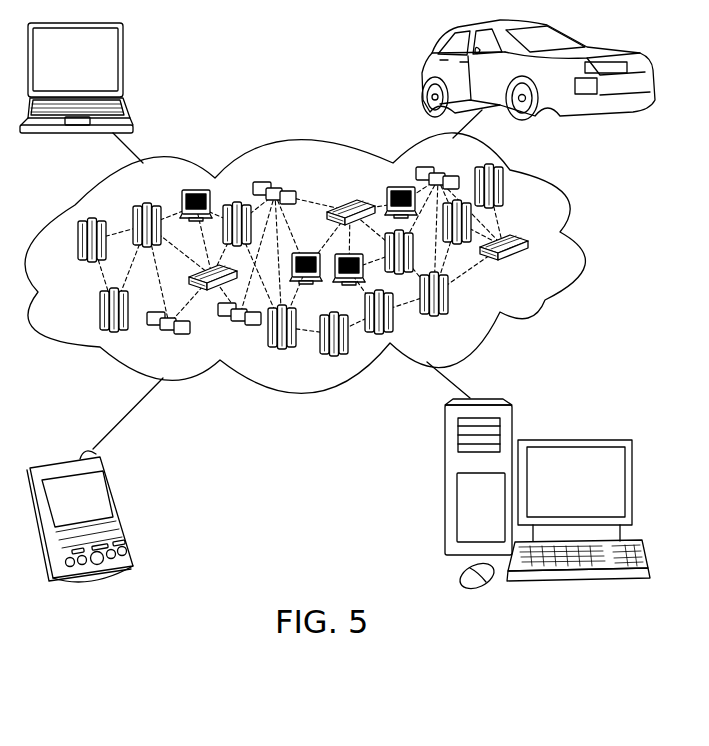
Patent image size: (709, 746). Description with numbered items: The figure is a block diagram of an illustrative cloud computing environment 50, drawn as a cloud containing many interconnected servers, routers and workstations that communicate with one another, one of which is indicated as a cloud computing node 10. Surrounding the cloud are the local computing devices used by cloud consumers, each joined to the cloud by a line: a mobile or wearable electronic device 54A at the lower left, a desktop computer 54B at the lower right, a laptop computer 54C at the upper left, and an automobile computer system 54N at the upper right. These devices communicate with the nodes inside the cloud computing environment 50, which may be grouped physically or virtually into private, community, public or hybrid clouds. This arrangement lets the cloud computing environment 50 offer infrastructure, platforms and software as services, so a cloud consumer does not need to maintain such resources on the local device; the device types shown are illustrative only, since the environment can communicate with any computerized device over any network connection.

The cloud computing node 10 is at (567, 278).
The cloud computing environment 50 is at (573, 243).
The mobile and/or wearable electronic device 54A is at (122, 507).
The desktop computer 54B is at (573, 437).
The laptop computer 54C is at (123, 65).
The automobile computer system 54N is at (421, 72).